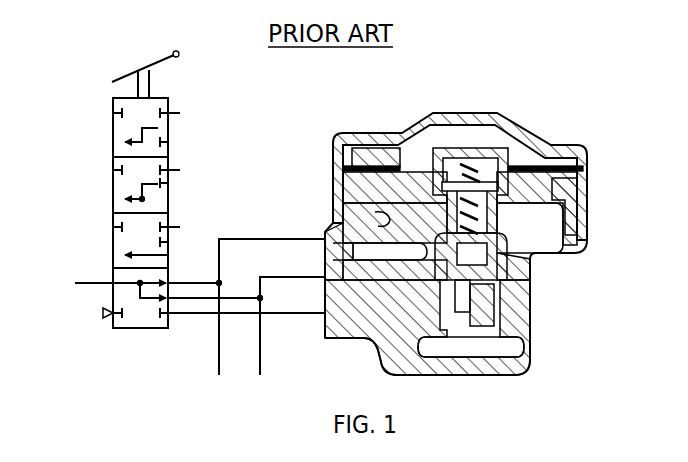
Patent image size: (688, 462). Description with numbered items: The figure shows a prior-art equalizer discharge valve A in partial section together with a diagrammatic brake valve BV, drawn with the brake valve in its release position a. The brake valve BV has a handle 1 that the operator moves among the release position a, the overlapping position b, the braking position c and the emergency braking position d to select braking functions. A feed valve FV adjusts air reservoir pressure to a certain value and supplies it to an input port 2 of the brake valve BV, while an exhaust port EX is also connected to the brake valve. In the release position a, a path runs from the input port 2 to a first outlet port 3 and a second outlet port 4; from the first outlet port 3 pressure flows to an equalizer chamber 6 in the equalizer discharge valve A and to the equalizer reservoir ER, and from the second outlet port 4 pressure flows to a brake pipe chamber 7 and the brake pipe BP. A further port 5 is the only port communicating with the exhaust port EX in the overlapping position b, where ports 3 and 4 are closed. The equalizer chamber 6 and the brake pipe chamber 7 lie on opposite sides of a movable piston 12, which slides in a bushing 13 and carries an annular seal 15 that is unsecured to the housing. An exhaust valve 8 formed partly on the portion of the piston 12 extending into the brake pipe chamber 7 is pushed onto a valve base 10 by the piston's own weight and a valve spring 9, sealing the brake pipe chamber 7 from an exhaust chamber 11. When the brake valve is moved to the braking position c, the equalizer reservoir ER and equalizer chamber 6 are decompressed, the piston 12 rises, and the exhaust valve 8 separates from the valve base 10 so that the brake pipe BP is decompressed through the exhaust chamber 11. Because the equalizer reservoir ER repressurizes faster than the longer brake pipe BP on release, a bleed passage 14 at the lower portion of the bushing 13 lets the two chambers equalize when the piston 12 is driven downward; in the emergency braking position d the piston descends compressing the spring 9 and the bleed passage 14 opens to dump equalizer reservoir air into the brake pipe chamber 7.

The handle 1 is at (150, 66).
The input port 2 is at (113, 281).
The first outlet port 3 is at (170, 283).
The second outlet port 4 is at (170, 300).
The port 5 is at (168, 318).
The release position a is at (142, 328).
The overlapping position b is at (154, 233).
The braking position c is at (154, 179).
The emergency braking position d is at (154, 123).
The brake valve BV is at (108, 184).
The feed valve FV is at (77, 284).
The exhaust port EX is at (90, 312).
The equalizer reservoir ER is at (246, 321).
The brake pipe BP is at (246, 340).
The equalizer discharge valve A is at (462, 236).
The equalizer chamber 6 is at (437, 133).
The brake pipe chamber 7 is at (380, 256).
The exhaust valve 8 is at (500, 271).
The valve spring 9 is at (468, 160).
The valve base 10 is at (492, 305).
The exhaust chamber 11 is at (483, 348).
The piston 12 is at (520, 172).
The bushing 13 is at (375, 180).
The bleed passage 14 is at (378, 222).
The annular seal 15 is at (577, 190).